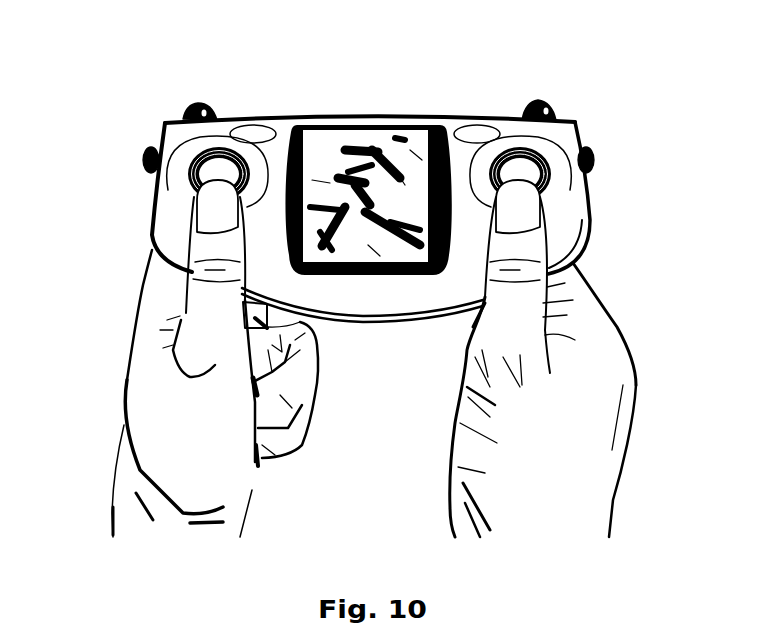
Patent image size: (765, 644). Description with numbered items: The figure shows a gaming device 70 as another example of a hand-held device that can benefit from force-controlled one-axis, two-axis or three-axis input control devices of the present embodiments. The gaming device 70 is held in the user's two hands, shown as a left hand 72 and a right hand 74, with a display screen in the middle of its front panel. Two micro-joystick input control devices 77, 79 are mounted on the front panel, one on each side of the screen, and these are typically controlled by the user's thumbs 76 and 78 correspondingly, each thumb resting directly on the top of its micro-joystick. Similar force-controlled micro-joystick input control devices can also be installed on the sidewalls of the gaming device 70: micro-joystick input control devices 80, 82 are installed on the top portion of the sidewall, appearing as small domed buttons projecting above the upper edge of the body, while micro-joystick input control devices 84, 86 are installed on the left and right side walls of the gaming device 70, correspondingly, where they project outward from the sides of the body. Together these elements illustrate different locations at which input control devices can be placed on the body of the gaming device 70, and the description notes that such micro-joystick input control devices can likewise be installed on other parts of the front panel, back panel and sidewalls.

The gaming device 70 is at (353, 112).
The left hand 72 is at (155, 395).
The right hand 74 is at (583, 403).
The thumb 76 is at (222, 205).
The thumb 78 is at (516, 205).
The micro-joystick input control device 77 is at (196, 153).
The micro-joystick input control device 79 is at (543, 153).
The micro-joystick input control device 80 is at (195, 103).
The micro-joystick input control device 82 is at (540, 100).
The micro-joystick input control device 84 is at (147, 165).
The micro-joystick input control device 86 is at (595, 165).